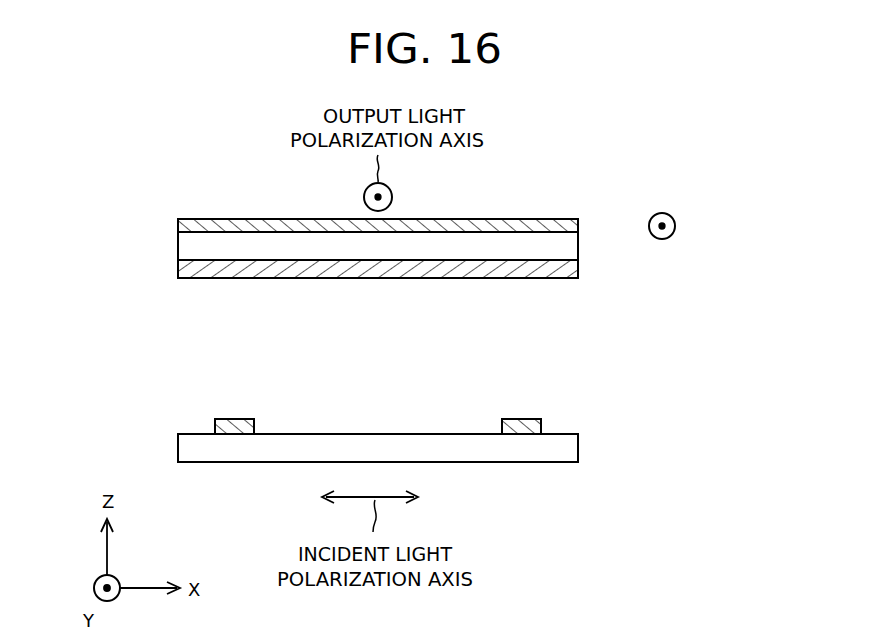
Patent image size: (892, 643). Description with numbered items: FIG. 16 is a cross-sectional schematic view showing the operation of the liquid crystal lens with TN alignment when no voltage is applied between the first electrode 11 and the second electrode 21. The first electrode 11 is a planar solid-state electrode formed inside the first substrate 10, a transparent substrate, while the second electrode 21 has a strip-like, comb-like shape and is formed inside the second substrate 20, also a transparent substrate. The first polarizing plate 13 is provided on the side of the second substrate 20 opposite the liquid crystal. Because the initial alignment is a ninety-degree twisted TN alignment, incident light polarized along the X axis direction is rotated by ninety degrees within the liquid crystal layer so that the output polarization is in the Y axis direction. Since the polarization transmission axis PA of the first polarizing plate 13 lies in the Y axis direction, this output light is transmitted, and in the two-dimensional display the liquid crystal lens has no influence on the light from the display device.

The first polarizing plate 13 is at (579, 227).
The first substrate 10 is at (572, 246).
The first electrode 11 is at (579, 269).
The second electrode 21 is at (542, 421).
The second substrate 20 is at (572, 446).
The polarization transmission axis PA is at (676, 226).